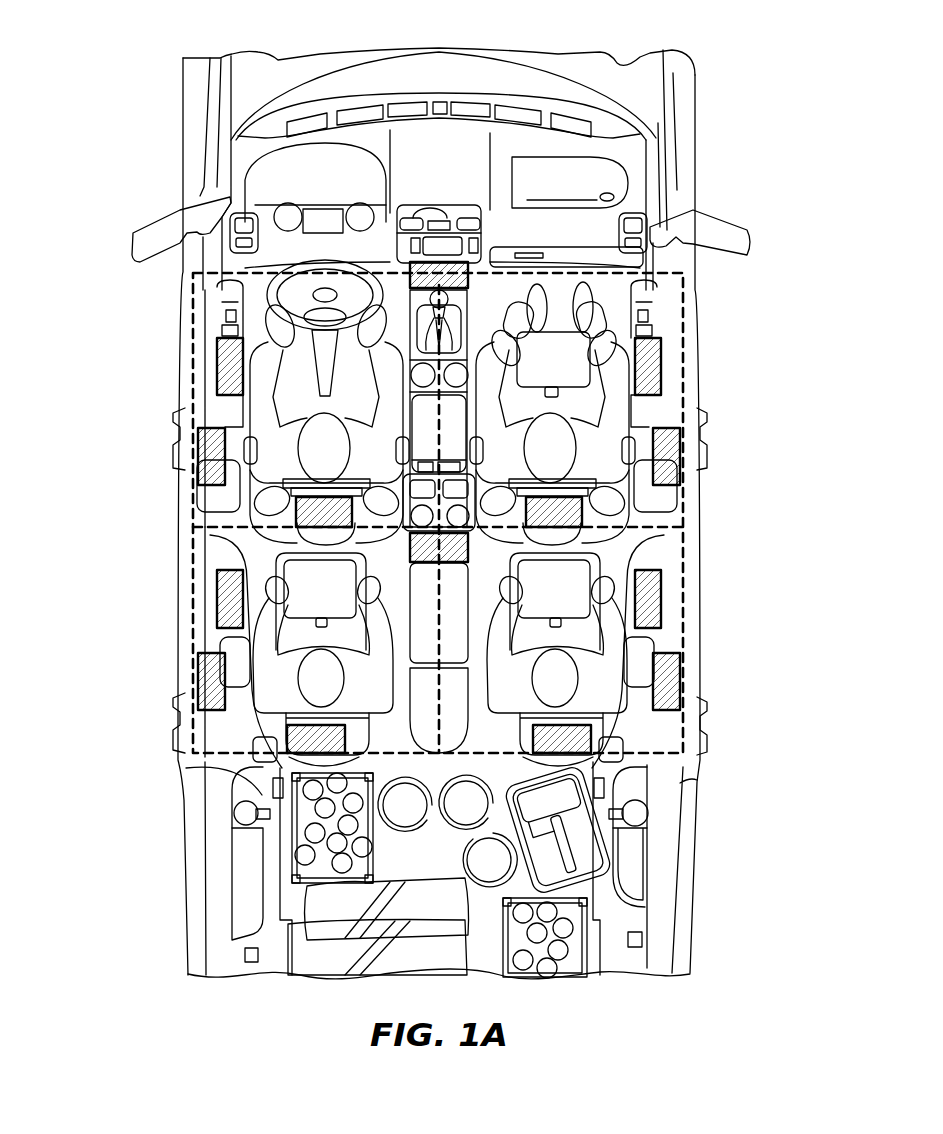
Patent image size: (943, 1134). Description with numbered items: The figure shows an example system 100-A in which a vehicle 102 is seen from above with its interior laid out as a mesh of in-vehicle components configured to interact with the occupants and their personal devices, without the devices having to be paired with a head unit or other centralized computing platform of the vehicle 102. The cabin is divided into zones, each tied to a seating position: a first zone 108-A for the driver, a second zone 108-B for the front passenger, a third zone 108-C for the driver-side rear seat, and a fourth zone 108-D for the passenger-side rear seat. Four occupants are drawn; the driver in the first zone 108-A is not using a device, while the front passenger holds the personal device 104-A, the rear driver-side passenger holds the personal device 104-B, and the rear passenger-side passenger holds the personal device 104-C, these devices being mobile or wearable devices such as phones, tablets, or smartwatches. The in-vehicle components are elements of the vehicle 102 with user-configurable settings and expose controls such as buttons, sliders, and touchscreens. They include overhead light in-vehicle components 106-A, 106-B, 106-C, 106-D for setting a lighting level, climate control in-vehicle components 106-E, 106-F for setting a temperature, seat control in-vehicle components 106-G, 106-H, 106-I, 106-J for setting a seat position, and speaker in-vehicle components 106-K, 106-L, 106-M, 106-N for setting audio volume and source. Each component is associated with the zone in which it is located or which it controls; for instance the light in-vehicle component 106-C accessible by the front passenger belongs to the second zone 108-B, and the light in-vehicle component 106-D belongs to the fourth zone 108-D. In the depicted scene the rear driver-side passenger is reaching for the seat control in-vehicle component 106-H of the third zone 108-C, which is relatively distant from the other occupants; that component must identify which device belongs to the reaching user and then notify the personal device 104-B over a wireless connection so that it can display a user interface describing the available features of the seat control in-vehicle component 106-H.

The system 100-A is at (150, 26).
The vehicle 102 is at (183, 157).
The personal device 104-A is at (593, 345).
The personal device 104-B is at (240, 565).
The personal device 104-C is at (590, 567).
The overhead light in-vehicle component 106-A is at (187, 448).
The overhead light in-vehicle component 106-B is at (198, 683).
The overhead light in-vehicle component 106-C is at (680, 450).
The overhead light in-vehicle component 106-D is at (680, 672).
The climate control in-vehicle component 106-E is at (227, 300).
The climate control in-vehicle component 106-F is at (267, 543).
The seat control in-vehicle component 106-G is at (213, 355).
The seat control in-vehicle component 106-H is at (217, 592).
The seat control in-vehicle component 106-I is at (662, 355).
The seat control in-vehicle component 106-J is at (662, 596).
The speaker in-vehicle component 106-K is at (235, 499).
The speaker in-vehicle component 106-L is at (213, 737).
The speaker in-vehicle component 106-M is at (583, 506).
The speaker in-vehicle component 106-N is at (607, 739).
The first zone 108-A is at (187, 403).
The second zone 108-B is at (688, 397).
The third zone 108-C is at (197, 645).
The fourth zone 108-D is at (688, 628).